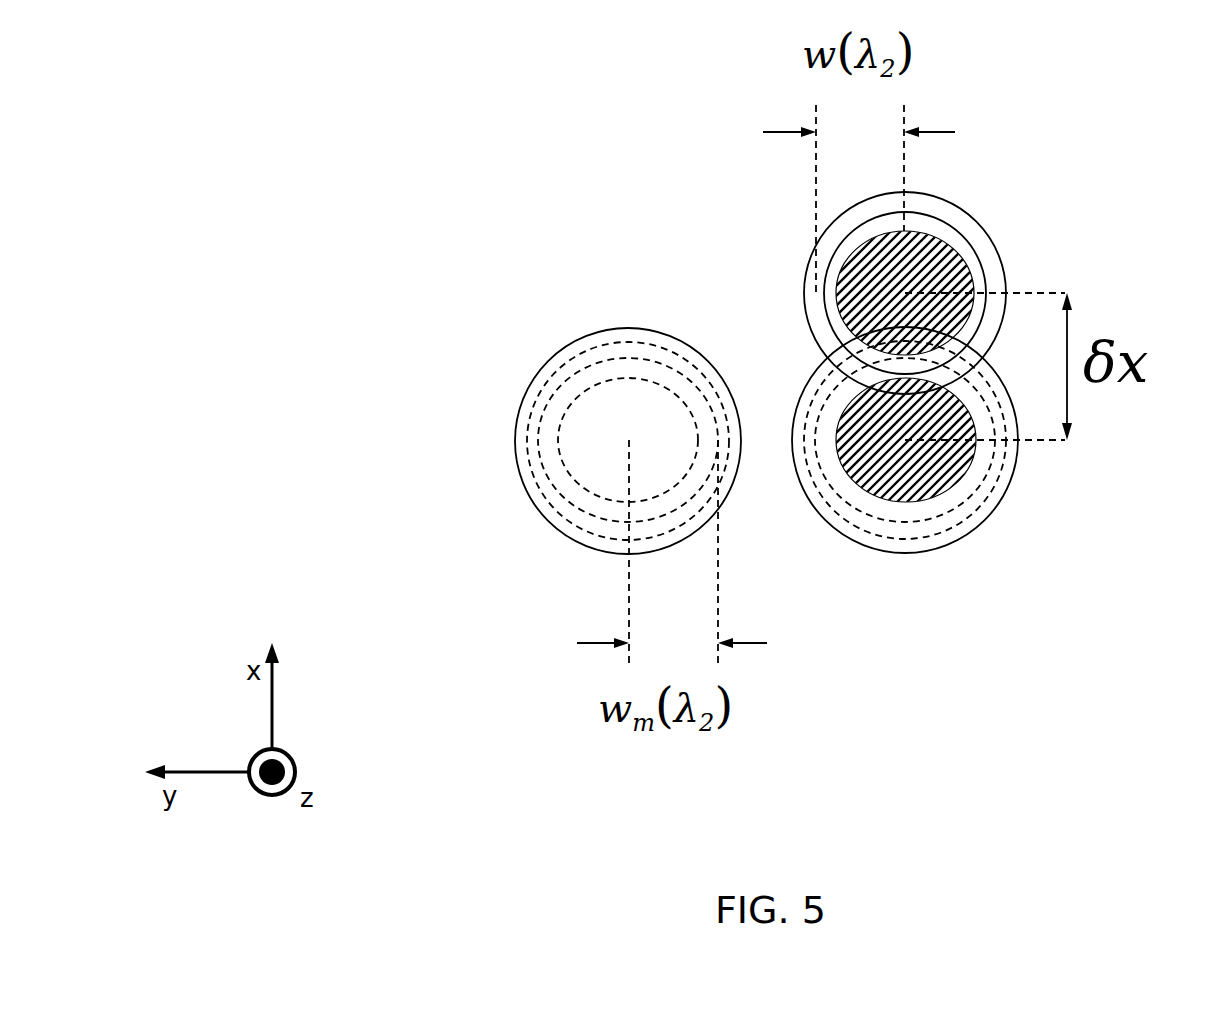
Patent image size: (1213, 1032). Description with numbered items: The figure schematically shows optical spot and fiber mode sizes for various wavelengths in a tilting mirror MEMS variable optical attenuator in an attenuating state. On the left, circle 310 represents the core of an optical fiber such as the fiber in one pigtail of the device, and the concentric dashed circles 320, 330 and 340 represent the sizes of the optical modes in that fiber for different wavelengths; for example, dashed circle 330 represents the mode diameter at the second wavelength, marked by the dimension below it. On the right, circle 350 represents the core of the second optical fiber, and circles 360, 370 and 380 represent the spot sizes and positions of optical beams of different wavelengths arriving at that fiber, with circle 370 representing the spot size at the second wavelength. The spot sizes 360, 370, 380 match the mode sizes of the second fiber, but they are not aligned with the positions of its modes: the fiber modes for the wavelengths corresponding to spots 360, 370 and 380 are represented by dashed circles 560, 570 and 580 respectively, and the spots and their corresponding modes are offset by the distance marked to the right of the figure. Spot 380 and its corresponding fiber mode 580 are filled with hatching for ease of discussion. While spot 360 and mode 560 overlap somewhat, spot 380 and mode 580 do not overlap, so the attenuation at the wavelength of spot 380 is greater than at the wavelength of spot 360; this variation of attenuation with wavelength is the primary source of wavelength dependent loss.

The circle representing fiber core 310 is at (533, 378).
The dashed circle representing optical mode size 320 is at (577, 353).
The dashed circle representing mode diameter 330 is at (635, 358).
The dashed circle representing optical mode size 340 is at (667, 387).
The circle representing second fiber core 350 is at (997, 508).
The spot 360 is at (972, 214).
The spot 370 is at (962, 236).
The spot 380 is at (969, 270).
The fiber mode 560 is at (962, 520).
The fiber mode 570 is at (922, 520).
The fiber mode 580 is at (890, 503).